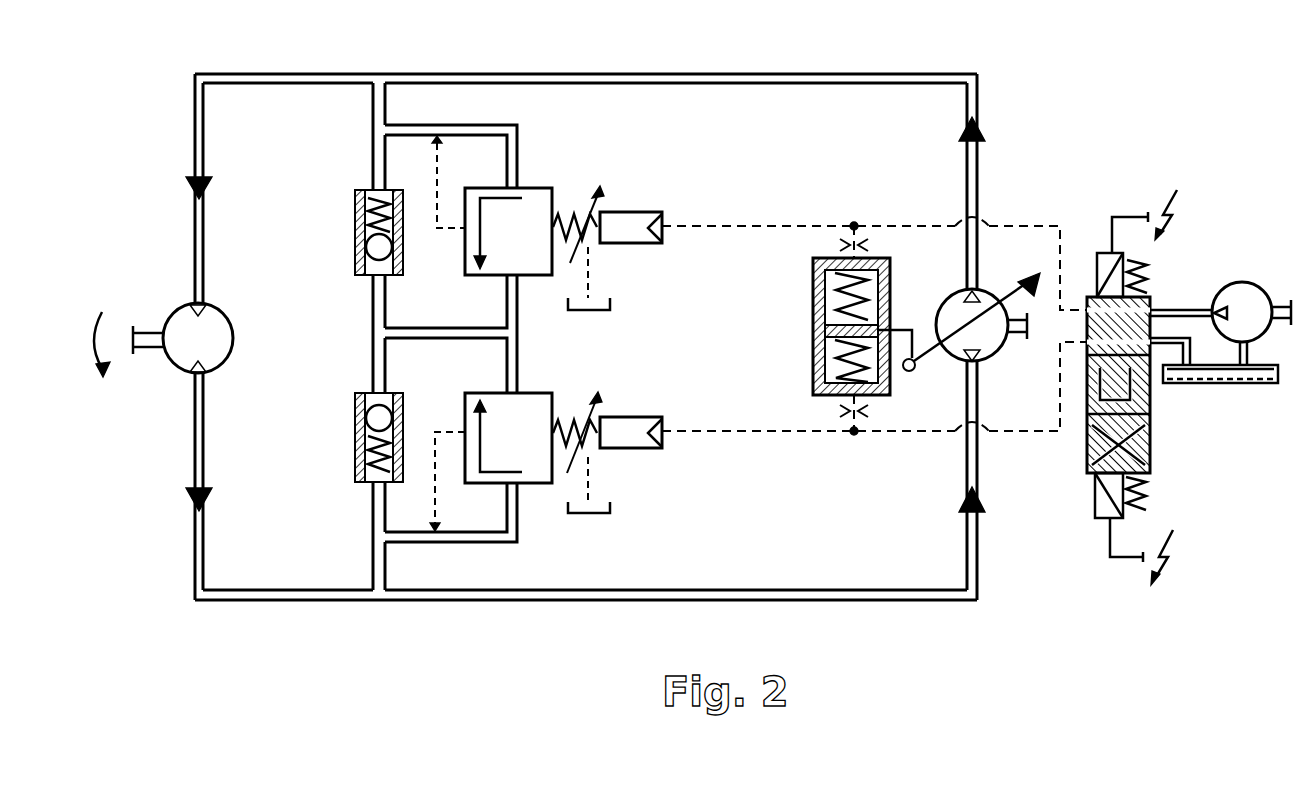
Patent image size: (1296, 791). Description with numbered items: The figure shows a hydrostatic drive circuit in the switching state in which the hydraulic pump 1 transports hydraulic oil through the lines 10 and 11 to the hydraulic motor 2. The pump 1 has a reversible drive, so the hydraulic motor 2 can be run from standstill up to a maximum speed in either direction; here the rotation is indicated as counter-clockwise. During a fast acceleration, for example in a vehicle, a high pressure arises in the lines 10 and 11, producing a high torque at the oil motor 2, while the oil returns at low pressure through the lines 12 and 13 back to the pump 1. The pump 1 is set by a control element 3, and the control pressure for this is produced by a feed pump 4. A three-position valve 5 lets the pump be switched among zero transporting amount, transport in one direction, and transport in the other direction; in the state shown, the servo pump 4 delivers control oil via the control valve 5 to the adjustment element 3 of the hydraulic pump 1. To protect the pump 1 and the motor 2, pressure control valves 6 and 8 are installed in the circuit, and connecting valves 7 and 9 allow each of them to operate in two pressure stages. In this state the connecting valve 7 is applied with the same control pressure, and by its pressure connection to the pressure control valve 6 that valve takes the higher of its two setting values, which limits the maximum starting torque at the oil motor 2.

The hydraulic pump 1 is at (993, 328).
The hydraulic motor 2 is at (175, 355).
The control element 3 is at (870, 303).
The feed pump 4 is at (1258, 300).
The three-position valve 5 is at (1153, 310).
The pressure control valve 6 is at (535, 205).
The connecting valve 7 is at (627, 223).
The pressure control valve 8 is at (537, 462).
The connecting valve 9 is at (626, 442).
The line 10 is at (970, 104).
The line 11 is at (197, 113).
The line 12 is at (197, 549).
The line 13 is at (972, 567).